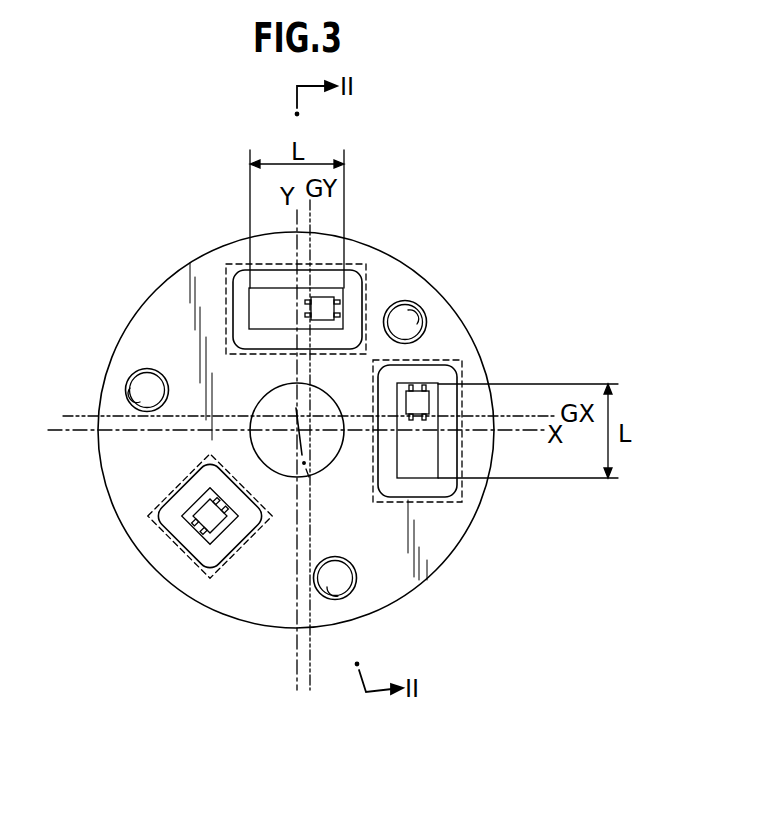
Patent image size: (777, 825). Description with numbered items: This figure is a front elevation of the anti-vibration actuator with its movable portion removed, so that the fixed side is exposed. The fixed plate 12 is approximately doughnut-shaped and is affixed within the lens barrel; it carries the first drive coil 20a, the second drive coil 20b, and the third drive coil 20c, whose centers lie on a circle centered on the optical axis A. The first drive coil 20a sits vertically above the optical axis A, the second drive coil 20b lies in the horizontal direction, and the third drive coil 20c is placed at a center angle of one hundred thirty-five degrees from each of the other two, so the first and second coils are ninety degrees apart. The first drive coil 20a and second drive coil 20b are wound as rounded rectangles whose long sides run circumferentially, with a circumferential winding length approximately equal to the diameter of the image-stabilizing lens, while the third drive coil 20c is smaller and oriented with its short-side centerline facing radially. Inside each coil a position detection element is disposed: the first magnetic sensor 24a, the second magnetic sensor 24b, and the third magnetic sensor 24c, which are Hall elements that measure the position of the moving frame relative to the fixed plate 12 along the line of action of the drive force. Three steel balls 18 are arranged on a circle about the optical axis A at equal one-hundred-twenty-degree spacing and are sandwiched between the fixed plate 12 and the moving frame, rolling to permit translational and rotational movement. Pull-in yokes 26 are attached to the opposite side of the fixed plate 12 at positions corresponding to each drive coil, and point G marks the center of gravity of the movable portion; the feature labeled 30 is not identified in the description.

The fixed plate 12 is at (143, 302).
The steel balls 18 is at (138, 372).
The first drive coil 20a is at (305, 263).
The second drive coil 20b is at (481, 458).
The third drive coil 20c is at (149, 552).
The first magnetic sensor 24a is at (318, 305).
The second magnetic sensor 24b is at (418, 402).
The third magnetic sensor 24c is at (210, 517).
The pull-in yokes 26 is at (233, 266).
The recess in hole 30 is at (130, 394).
The optical axis A is at (295, 429).
The center of gravity G is at (310, 417).